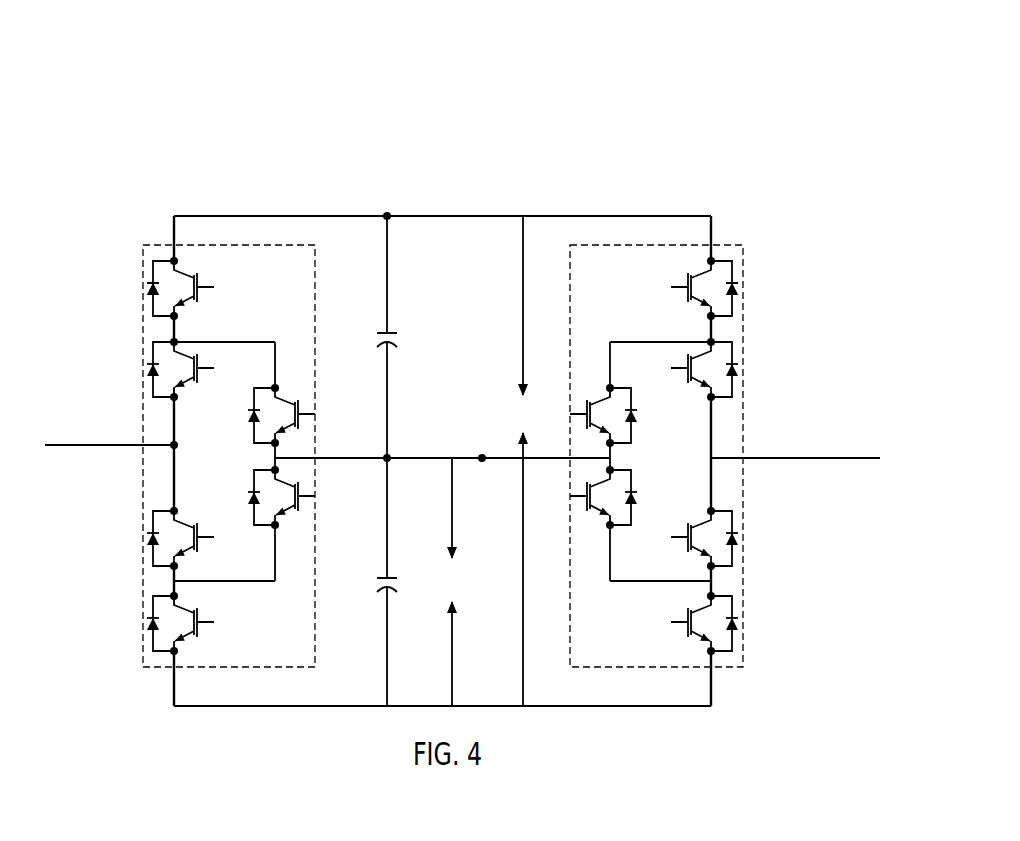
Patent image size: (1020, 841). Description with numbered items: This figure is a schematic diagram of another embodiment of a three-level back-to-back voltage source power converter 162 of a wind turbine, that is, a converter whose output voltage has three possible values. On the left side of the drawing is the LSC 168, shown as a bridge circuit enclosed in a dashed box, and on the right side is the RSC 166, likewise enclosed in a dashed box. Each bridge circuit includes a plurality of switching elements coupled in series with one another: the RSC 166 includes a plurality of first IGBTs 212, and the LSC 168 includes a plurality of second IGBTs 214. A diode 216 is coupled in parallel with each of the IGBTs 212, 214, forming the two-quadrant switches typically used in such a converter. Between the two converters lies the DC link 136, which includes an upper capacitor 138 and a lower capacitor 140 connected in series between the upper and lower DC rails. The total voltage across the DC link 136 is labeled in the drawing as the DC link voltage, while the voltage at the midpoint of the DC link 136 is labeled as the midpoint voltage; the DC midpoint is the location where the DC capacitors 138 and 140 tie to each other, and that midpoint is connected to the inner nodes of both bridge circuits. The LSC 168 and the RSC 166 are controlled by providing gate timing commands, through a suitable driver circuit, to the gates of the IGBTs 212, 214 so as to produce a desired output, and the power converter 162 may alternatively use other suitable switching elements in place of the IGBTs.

The three-level back-to-back voltage source power converter 162 is at (667, 92).
The DC link 136 is at (390, 252).
The upper capacitor 138 is at (395, 320).
The lower capacitor 140 is at (383, 572).
The LSC 168 is at (158, 243).
The RSC 166 is at (732, 243).
The second IGBTs 214 is at (182, 270).
The first IGBTs 212 is at (700, 275).
The diode 216 is at (148, 290).